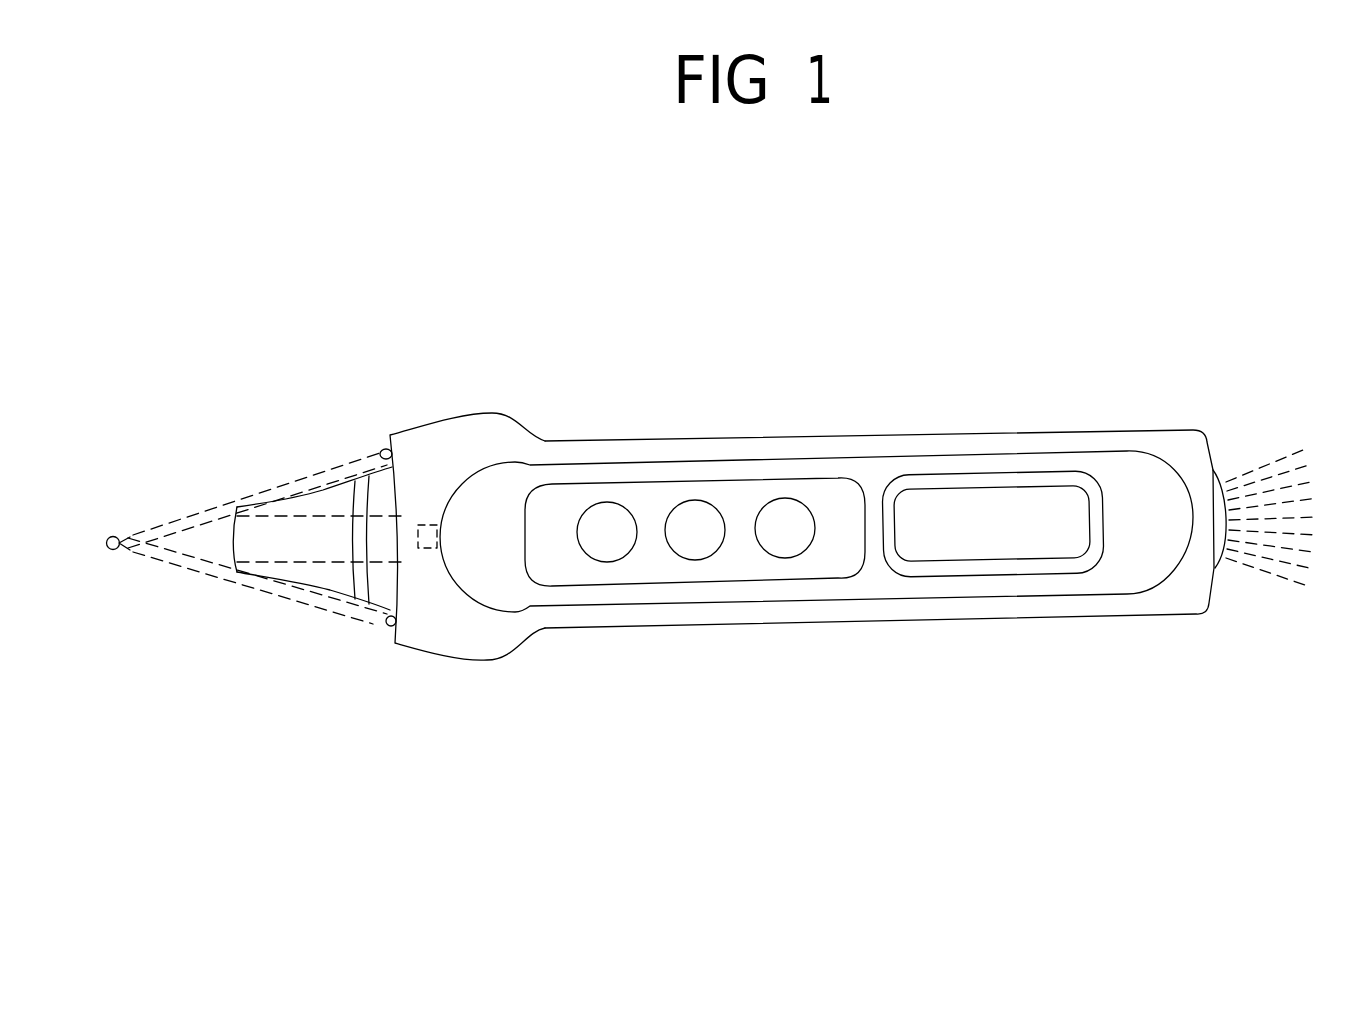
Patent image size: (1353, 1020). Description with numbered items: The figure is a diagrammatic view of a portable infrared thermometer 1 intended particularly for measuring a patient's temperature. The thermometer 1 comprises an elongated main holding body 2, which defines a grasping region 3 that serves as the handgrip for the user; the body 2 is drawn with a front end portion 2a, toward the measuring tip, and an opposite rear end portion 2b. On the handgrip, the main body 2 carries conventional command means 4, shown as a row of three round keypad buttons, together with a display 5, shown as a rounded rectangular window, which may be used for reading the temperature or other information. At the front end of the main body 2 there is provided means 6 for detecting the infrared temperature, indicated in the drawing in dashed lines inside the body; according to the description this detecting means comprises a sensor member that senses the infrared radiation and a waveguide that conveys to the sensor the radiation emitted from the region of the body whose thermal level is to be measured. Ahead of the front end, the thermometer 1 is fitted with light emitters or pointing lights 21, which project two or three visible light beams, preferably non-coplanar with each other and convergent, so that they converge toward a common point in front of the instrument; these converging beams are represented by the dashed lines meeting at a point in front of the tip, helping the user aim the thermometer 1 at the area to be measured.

The infrared thermometer 1 is at (988, 700).
The main holding body 2 is at (1017, 430).
The front end portion of main body 2a is at (510, 414).
The rear end portion of main body 2b is at (1183, 428).
The grasping region 3 is at (879, 473).
The command means 4 is at (697, 441).
The display 5 is at (1080, 473).
The means for detecting the infrared temperature 6 is at (412, 500).
The pointing lights 21 is at (392, 457).